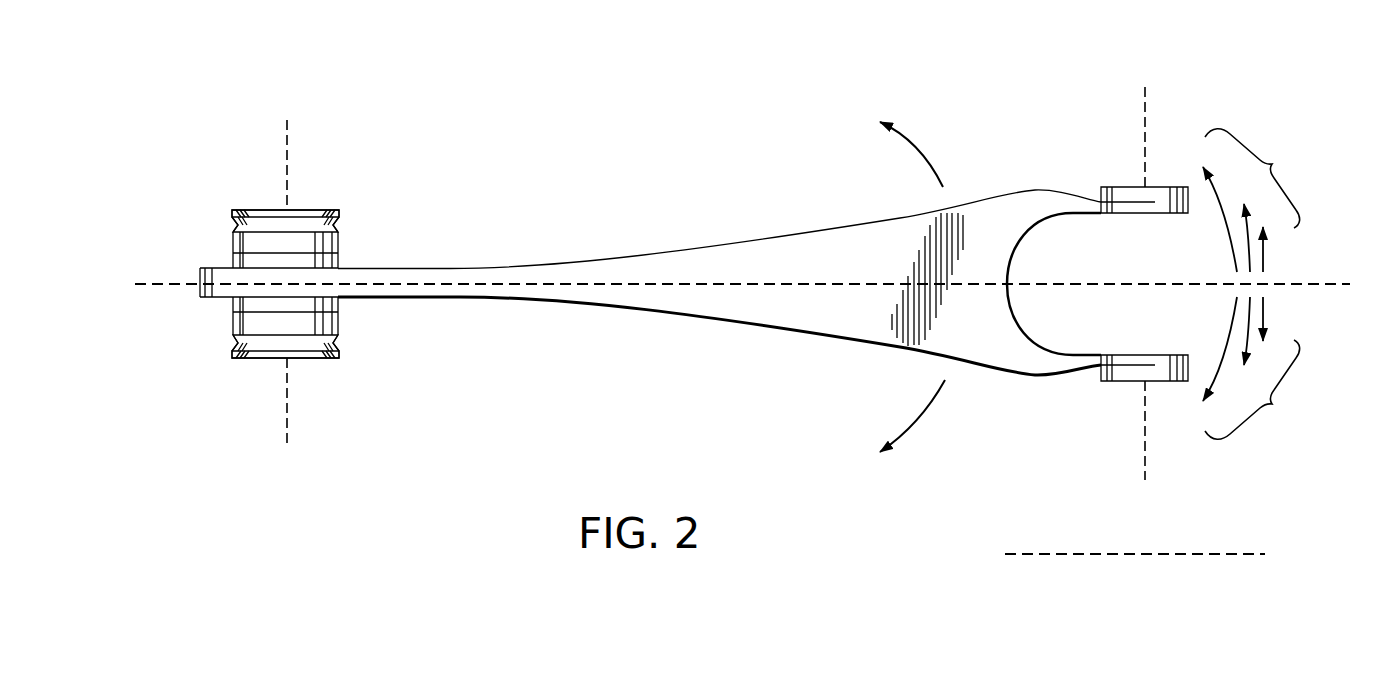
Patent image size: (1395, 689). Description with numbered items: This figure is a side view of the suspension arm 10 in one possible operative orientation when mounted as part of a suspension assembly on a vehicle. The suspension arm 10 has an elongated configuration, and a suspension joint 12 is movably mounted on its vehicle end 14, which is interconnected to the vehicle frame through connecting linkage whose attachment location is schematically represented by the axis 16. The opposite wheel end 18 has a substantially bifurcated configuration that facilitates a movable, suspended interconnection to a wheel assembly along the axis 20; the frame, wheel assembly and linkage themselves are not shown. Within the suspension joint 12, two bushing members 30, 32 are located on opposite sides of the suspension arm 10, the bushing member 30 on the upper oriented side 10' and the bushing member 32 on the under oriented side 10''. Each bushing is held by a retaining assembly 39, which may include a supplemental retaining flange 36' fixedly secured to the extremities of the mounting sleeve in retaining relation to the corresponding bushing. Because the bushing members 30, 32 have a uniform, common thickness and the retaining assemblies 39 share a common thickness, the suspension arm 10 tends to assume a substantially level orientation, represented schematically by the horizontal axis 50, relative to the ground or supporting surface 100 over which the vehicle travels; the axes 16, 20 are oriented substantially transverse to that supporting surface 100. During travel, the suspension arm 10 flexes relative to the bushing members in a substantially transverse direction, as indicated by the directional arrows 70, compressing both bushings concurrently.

The suspension arm 10 is at (719, 287).
The upper oriented side 10' is at (719, 219).
The under oriented side 10'' is at (719, 347).
The suspension joint 12 is at (277, 238).
The vehicle end 14 is at (370, 260).
The axis 16 is at (287, 137).
The wheel end 18 is at (1063, 160).
The axis 20 is at (1145, 103).
The bushing member 30 is at (247, 243).
The bushing member 32 is at (247, 322).
The supplemental retaining flange 36' is at (228, 257).
The retaining assembly 39 is at (238, 208).
The horizontal axis 50 is at (1278, 284).
The directional arrows 70 is at (1254, 284).
The supporting surface 100 is at (1103, 553).